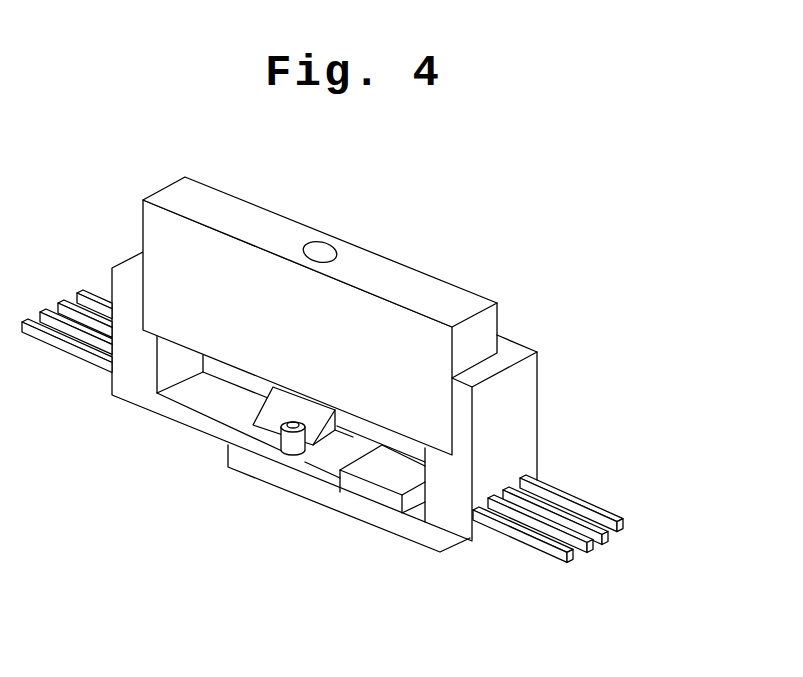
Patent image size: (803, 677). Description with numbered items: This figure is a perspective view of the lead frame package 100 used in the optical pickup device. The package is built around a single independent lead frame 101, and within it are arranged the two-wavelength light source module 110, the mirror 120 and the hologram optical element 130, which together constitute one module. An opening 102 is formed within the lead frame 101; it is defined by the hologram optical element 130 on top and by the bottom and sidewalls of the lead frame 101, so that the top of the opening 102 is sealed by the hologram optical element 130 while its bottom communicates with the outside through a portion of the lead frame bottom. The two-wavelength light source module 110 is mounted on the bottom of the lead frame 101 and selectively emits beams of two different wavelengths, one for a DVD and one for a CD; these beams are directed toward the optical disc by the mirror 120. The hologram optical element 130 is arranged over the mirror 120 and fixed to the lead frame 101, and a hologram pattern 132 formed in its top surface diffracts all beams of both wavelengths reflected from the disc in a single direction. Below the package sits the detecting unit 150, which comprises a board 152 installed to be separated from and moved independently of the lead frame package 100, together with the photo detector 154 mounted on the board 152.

The lead frame package 100 is at (540, 377).
The lead frame 101 is at (510, 428).
The opening 102 is at (357, 449).
The two-wavelength light source module 110 is at (285, 447).
The mirror 120 is at (268, 404).
The hologram optical element 130 is at (484, 326).
The hologram pattern 132 is at (320, 251).
The detecting unit 150 is at (349, 556).
The board 152 is at (429, 541).
The photo detector 154 is at (382, 493).